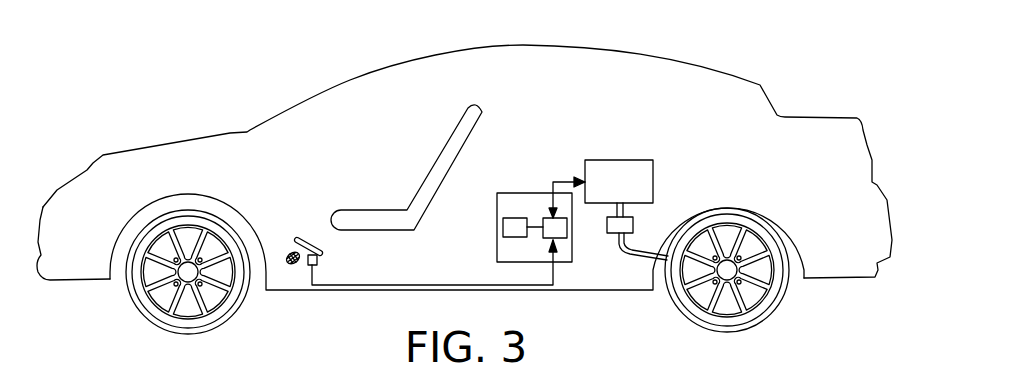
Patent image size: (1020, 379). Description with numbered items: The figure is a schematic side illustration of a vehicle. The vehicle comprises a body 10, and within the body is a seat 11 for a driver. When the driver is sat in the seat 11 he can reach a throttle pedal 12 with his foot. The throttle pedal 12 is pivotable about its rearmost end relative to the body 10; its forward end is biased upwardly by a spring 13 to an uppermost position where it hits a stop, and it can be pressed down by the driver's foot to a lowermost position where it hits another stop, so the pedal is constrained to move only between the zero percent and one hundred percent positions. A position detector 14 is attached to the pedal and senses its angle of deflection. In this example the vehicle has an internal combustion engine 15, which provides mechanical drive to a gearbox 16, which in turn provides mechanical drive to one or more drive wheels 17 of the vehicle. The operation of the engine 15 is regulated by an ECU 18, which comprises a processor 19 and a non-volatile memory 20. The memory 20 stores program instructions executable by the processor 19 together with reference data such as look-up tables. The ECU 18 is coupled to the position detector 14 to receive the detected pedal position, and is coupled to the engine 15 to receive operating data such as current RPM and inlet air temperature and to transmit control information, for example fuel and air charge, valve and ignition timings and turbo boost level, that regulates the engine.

The body 10 is at (223, 133).
The seat 11 is at (449, 145).
The throttle pedal 12 is at (302, 237).
The spring 13 is at (291, 249).
The position detector 14 is at (318, 258).
The internal combustion engine 15 is at (620, 160).
The gearbox 16 is at (609, 238).
The drive wheels 17 is at (767, 300).
The ECU 18 is at (497, 257).
The processor 19 is at (548, 217).
The non-volatile memory 20 is at (503, 226).